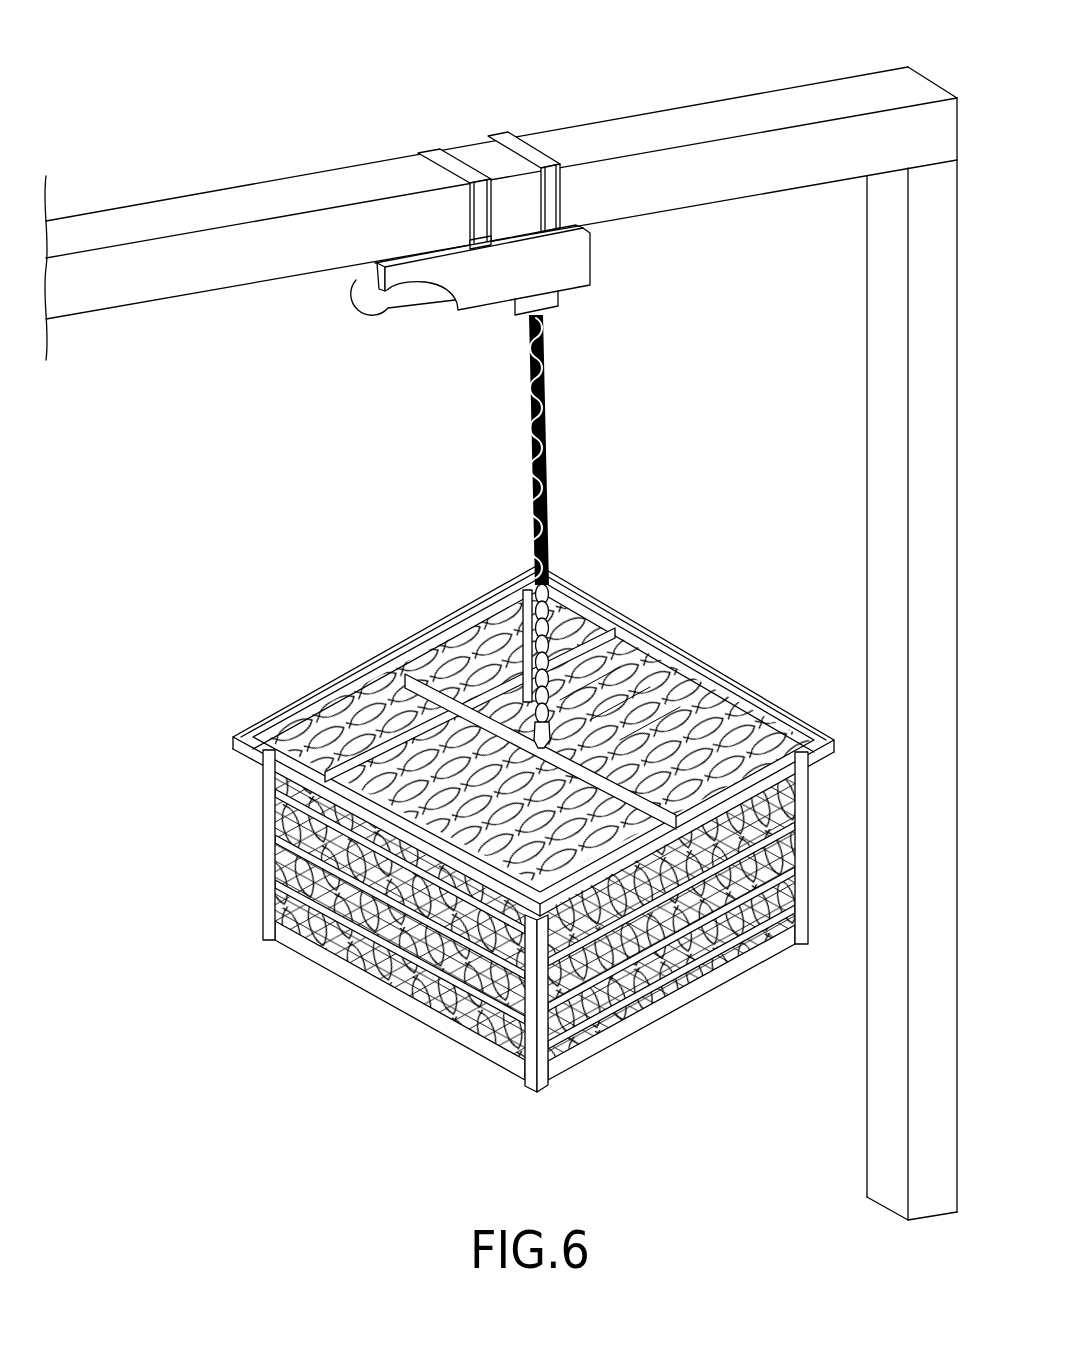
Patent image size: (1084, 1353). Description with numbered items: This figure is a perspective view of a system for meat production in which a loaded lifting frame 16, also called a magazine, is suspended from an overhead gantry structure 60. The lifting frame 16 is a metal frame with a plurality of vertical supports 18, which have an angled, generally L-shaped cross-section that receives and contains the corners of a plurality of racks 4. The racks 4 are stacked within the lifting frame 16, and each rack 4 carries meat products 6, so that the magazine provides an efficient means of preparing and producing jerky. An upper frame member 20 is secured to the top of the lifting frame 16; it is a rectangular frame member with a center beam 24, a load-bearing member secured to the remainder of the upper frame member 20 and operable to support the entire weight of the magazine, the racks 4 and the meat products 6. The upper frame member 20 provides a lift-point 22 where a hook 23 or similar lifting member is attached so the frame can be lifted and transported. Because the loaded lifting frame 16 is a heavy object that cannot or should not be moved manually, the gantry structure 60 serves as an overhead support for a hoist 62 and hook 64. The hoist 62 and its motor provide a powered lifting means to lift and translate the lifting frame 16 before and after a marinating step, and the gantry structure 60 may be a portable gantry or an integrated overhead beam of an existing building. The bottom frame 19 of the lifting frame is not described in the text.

The gantry structure 60 is at (773, 103).
The hook 64 is at (577, 257).
The hoist 62 is at (510, 313).
The lifting frame 16 is at (497, 830).
The upper frame member 20 is at (642, 629).
The lift-point 22 is at (497, 727).
The hook 23 is at (620, 700).
The center beam 24 is at (410, 693).
The vertical supports 18 is at (272, 815).
The racks 4 is at (790, 818).
The meat products 6 is at (420, 995).
The bottom frame 19 is at (590, 1053).